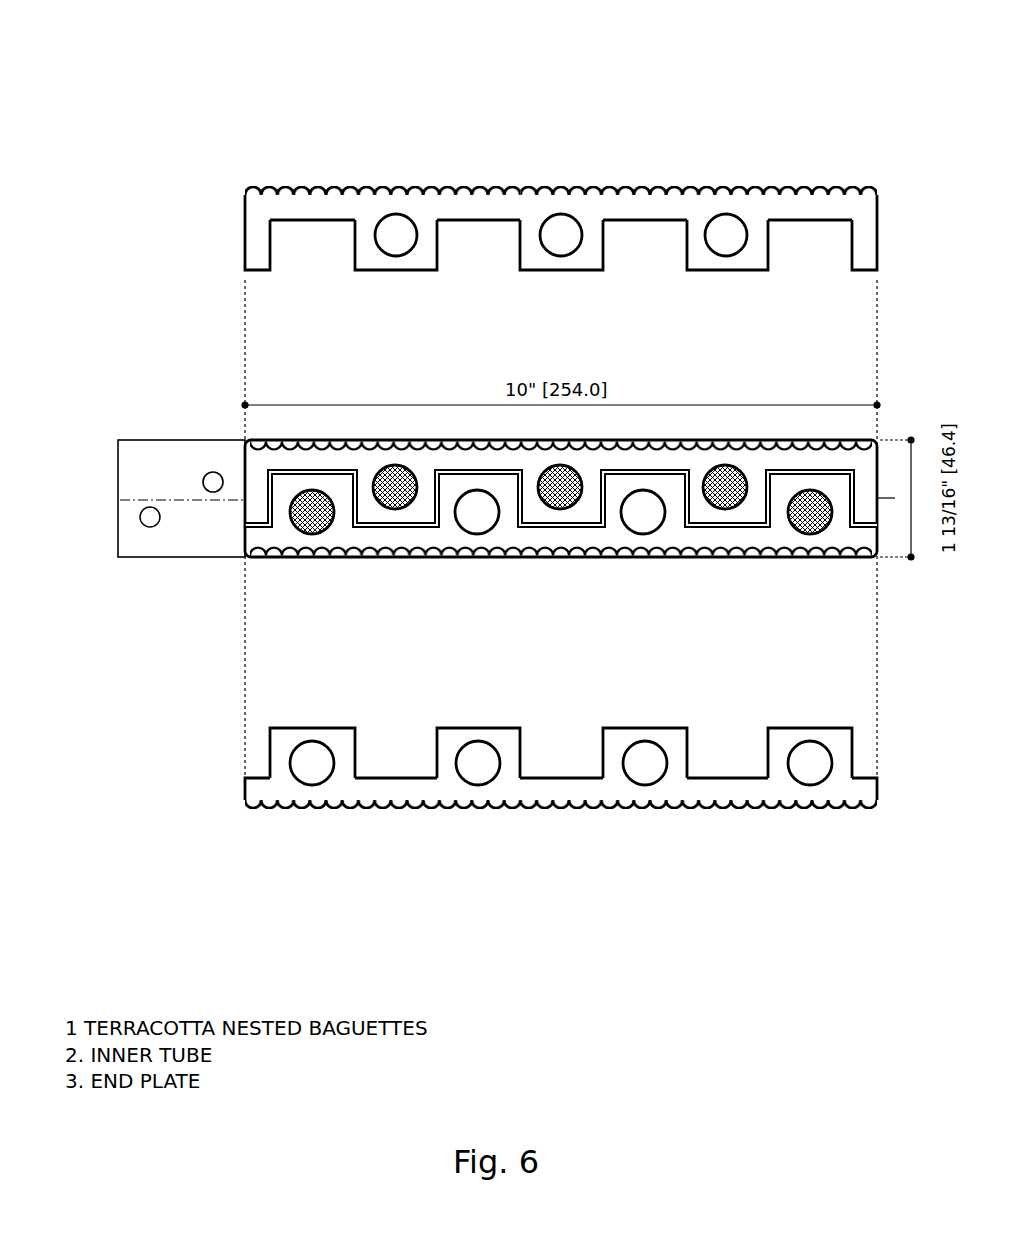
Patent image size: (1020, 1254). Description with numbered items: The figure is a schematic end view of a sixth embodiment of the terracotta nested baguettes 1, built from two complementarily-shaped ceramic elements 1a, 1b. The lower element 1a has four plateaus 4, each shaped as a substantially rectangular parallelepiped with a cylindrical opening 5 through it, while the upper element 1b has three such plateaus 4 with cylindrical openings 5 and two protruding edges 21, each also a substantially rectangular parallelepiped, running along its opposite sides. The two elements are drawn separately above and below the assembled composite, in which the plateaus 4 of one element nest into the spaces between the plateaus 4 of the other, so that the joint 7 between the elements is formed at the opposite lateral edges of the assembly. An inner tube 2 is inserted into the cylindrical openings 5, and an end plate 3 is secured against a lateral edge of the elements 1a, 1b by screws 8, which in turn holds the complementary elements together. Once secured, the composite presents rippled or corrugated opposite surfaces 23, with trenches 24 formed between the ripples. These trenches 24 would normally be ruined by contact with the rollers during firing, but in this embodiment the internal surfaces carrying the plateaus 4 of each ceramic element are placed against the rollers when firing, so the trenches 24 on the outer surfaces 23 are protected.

The terracotta nested baguettes 1 is at (243, 527).
The ceramic element 1a is at (245, 789).
The ceramic element 1b is at (245, 230).
The inner tube 2 is at (245, 517).
The end plate 3 is at (118, 461).
The plateau 4 is at (805, 726).
The cylindrical opening 5 is at (726, 232).
The joint 7 is at (877, 527).
The screw 8 is at (724, 476).
The protruding edge 21 is at (247, 272).
The rippled or corrugated surface 23 is at (620, 190).
The trench 24 is at (458, 176).